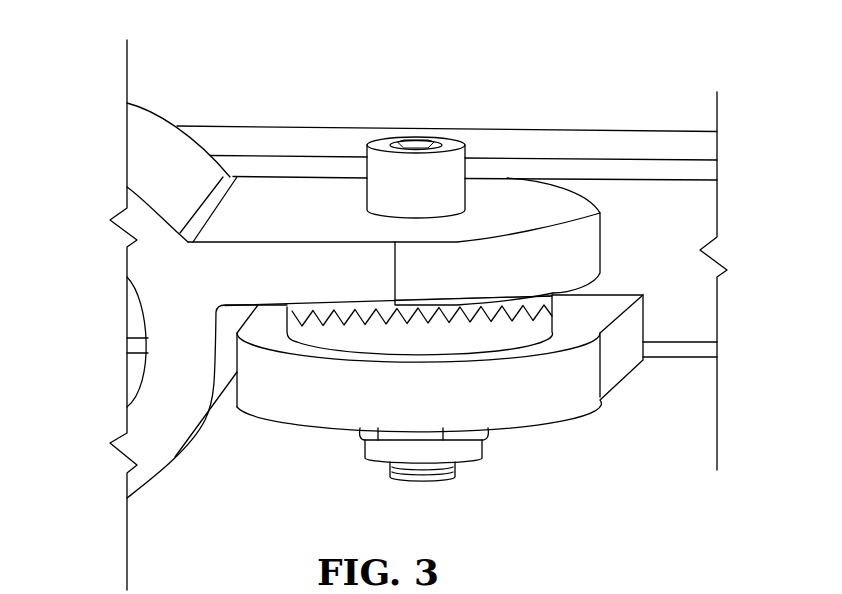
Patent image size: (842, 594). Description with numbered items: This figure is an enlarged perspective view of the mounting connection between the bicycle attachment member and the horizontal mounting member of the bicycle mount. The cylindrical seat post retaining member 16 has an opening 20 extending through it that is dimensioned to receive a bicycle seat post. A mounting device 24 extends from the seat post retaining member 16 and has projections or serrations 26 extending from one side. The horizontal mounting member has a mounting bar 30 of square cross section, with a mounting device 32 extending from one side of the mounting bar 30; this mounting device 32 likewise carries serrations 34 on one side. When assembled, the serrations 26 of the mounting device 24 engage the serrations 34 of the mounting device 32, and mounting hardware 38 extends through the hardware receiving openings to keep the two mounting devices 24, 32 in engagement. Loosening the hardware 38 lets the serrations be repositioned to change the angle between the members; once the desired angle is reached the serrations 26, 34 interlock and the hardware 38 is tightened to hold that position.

The seat post retaining member 16 is at (170, 428).
The opening 20 is at (140, 357).
The mounting device 24 is at (273, 190).
The serrations 26 is at (378, 328).
The mounting bar 30 is at (653, 140).
The mounting device 32 is at (613, 367).
The serrations 34 is at (477, 322).
The mounting hardware 38 is at (450, 138).